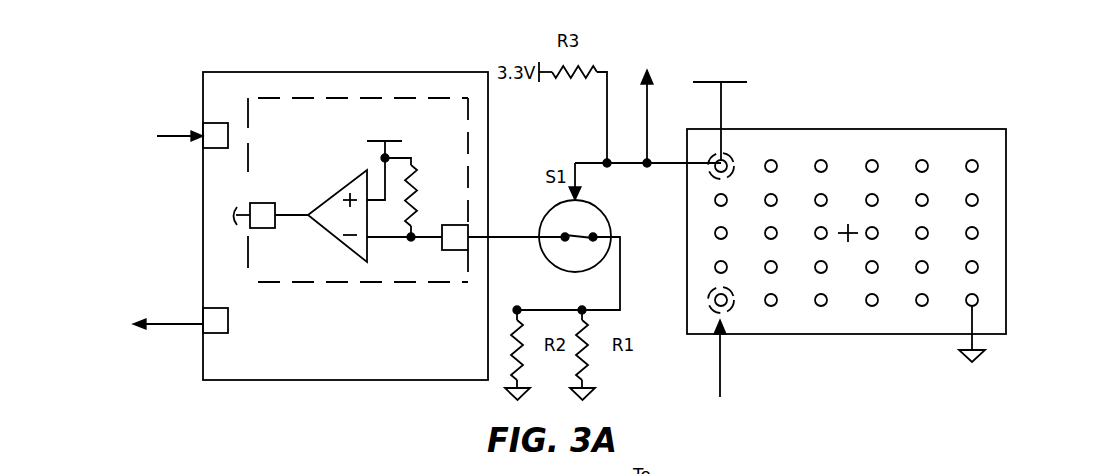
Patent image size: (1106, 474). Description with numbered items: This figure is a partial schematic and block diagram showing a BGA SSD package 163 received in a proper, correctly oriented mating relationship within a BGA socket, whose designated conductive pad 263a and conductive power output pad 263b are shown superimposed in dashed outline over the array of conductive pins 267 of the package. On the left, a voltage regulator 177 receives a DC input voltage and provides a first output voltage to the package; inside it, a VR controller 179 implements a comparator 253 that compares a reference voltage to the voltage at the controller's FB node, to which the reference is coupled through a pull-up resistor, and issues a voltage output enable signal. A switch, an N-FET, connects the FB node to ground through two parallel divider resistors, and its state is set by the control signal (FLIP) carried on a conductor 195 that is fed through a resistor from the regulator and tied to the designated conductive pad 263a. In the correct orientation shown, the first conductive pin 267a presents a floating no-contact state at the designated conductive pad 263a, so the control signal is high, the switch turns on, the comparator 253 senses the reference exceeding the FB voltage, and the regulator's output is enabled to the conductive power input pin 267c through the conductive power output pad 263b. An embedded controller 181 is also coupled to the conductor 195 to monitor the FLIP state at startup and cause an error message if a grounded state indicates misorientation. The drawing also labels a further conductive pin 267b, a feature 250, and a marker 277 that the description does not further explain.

The voltage regulator 177 is at (405, 72).
The VR controller 179 is at (354, 283).
The comparator 253 is at (347, 186).
The embedded controller 181 is at (647, 93).
The conductor 195 is at (661, 165).
The BGA SSD package 163 is at (881, 129).
The BGA pad array 250 is at (970, 141).
The designated conductive pad 263a is at (733, 157).
The conductive power output pad 263b is at (727, 311).
The conductive pins 267 is at (978, 202).
The first conductive pin 267a is at (712, 170).
The ground pad 267b is at (978, 301).
The conductive power input pin 267c is at (714, 306).
The center marker 277 is at (848, 243).